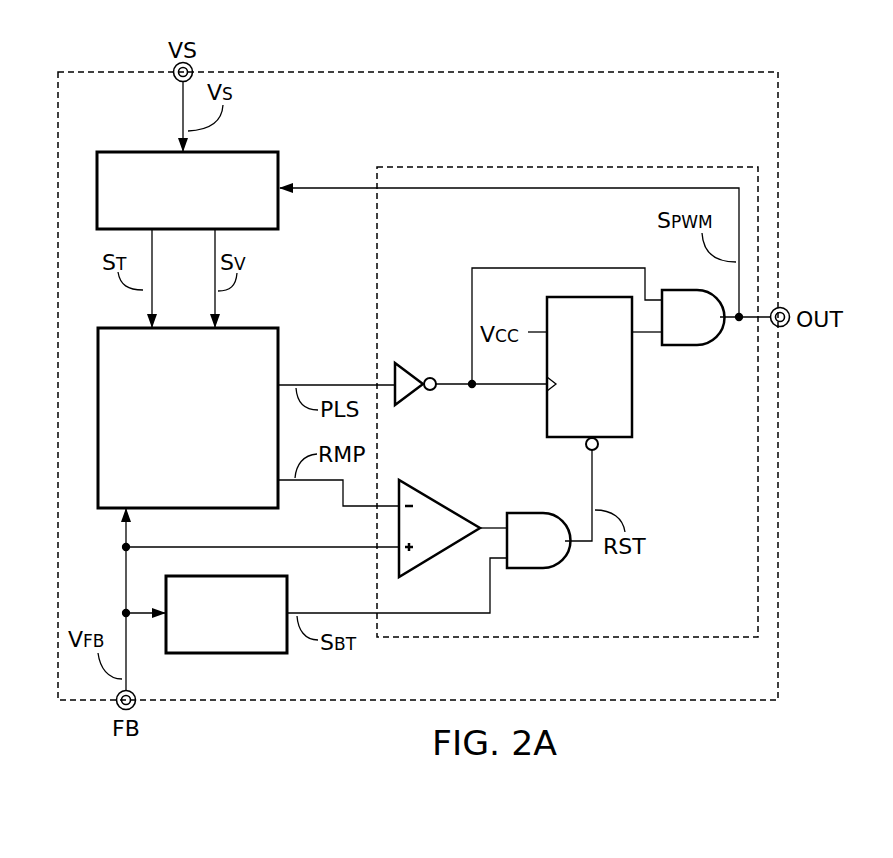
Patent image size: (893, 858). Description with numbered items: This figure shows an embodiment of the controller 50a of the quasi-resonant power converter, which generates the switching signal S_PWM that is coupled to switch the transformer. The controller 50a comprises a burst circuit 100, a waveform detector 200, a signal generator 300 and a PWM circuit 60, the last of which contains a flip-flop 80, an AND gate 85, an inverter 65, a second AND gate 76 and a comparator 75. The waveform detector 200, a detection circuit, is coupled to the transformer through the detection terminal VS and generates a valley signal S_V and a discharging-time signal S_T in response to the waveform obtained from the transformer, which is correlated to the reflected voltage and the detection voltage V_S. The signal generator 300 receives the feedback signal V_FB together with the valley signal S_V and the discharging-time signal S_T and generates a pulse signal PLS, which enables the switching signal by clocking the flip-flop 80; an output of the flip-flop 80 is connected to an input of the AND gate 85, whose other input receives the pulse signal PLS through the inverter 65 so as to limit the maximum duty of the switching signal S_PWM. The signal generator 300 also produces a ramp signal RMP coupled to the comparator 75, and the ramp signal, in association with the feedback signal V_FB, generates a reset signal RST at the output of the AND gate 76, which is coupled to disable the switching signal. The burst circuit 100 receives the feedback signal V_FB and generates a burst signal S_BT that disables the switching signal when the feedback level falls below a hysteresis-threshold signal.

The controller 50a is at (702, 71).
The PWM circuit 60 is at (667, 166).
The waveform detector 200 is at (275, 151).
The signal generator 300 is at (278, 345).
The burst circuit 100 is at (208, 656).
The inverter 65 is at (408, 362).
The flip-flop 80 is at (633, 410).
The AND gate 85 is at (682, 347).
The comparator 75 is at (432, 493).
The AND gate 76 is at (527, 570).